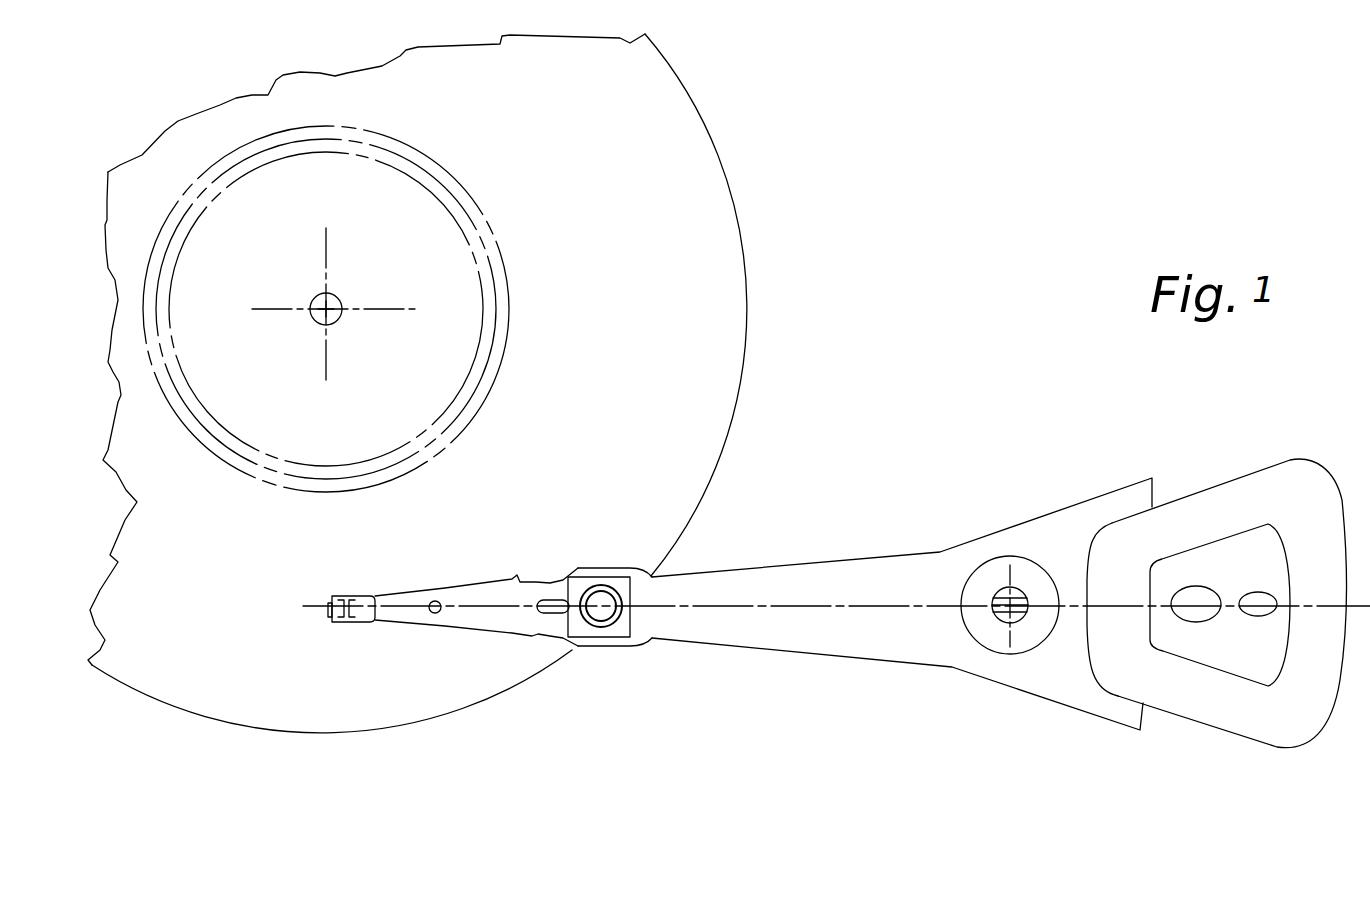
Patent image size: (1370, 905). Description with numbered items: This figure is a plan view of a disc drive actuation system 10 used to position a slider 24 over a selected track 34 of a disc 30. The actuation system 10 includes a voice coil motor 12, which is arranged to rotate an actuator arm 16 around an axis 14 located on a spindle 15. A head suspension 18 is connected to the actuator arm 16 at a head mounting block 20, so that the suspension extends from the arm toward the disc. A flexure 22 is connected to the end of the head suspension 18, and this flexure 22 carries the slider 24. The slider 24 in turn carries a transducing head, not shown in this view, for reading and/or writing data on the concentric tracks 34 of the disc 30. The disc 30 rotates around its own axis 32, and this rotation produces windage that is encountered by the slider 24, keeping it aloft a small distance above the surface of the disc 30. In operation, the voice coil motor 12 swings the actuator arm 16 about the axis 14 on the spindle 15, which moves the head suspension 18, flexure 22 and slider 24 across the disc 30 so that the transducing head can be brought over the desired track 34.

The disc drive actuation system 10 is at (936, 444).
The voice coil motor 12 is at (1313, 465).
The axis 14 is at (1000, 613).
The spindle 15 is at (1020, 588).
The actuator arm 16 is at (762, 567).
The head suspension 18 is at (445, 590).
The head mounting block 20 is at (593, 577).
The flexure 22 is at (347, 596).
The slider 24 is at (328, 612).
The disc 30 is at (732, 417).
The axis 32 is at (337, 295).
The track 34 is at (287, 491).